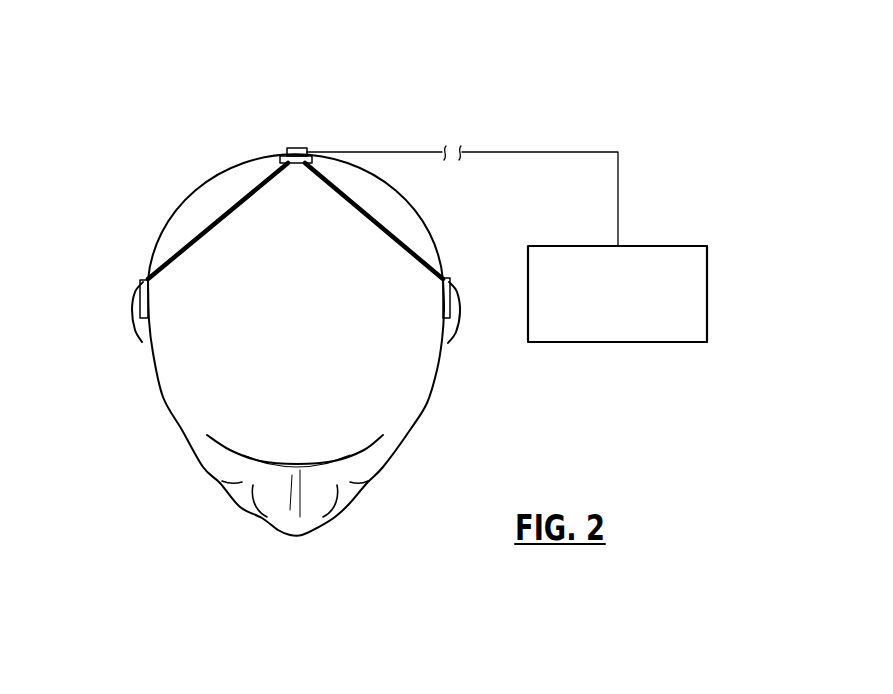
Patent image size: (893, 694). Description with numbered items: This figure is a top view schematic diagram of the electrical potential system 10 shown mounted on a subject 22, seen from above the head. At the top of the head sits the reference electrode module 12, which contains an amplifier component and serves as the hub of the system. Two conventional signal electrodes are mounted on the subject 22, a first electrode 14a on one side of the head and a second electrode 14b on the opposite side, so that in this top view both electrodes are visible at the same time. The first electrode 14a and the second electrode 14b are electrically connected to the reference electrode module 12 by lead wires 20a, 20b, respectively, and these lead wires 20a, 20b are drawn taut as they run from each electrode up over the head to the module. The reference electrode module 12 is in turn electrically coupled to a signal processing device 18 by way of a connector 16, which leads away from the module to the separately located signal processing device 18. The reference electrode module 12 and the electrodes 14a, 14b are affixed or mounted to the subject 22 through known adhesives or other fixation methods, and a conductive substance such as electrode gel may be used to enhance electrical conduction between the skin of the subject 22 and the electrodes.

The electrical potential system 10 is at (145, 145).
The reference electrode module 12 is at (297, 148).
The first electrode 14a is at (140, 292).
The second electrode 14b is at (452, 293).
The connector 16 is at (618, 197).
The signal processing device 18 is at (707, 297).
The lead wire 20a is at (202, 237).
The lead wire 20b is at (390, 242).
The subject 22 is at (413, 430).